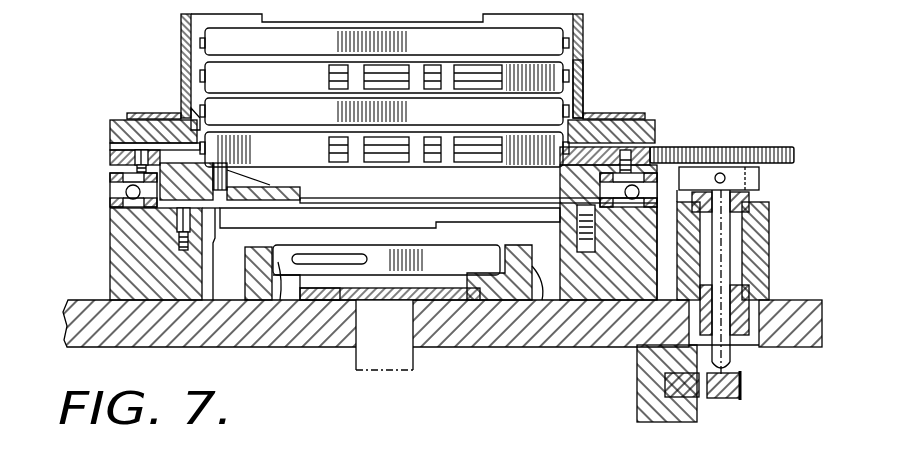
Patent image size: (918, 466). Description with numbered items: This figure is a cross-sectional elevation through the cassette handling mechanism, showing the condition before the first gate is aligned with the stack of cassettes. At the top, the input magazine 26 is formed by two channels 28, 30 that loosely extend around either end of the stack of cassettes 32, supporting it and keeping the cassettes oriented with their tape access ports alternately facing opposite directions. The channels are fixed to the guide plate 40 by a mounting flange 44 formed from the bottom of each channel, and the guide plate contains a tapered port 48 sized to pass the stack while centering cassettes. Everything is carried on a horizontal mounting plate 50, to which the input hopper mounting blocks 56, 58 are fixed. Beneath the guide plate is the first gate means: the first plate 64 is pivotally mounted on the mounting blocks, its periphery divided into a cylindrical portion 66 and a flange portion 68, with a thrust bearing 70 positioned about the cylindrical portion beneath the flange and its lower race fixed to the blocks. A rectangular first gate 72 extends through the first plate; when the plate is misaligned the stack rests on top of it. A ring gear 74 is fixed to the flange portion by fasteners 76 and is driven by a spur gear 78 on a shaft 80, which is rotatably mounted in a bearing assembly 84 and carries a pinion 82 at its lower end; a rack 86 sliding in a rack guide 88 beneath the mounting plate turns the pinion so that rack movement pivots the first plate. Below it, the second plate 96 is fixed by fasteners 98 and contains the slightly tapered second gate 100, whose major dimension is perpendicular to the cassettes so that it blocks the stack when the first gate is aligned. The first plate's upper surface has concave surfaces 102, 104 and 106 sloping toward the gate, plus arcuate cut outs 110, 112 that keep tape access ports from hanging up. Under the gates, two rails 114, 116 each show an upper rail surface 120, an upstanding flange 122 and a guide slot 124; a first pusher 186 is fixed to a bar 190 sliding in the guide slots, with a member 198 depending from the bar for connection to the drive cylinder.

The input magazine 26 is at (586, 38).
The channel 28 is at (586, 55).
The channel 30 is at (191, 10).
The stack of cassettes 32 is at (320, 19).
The guide plate 40 is at (657, 130).
The mounting flange 44 is at (143, 113).
The port 48 is at (200, 118).
The mounting plate 50 is at (562, 346).
The input hopper mounting block 56 is at (583, 272).
The input hopper mounting block 58 is at (110, 245).
The first plate 64 is at (108, 177).
The cylindrical portion 66 is at (255, 172).
The flange portion 68 is at (110, 187).
The thrust bearing 70 is at (110, 202).
The first gate 72 is at (283, 198).
The ring gear 74 is at (112, 147).
The fastener 76 is at (140, 148).
The spur gear 78 is at (786, 147).
The shaft 80 is at (722, 240).
The pinion 82 is at (742, 385).
The bearing assembly 84 is at (769, 273).
The rack 86 is at (686, 393).
The rack guide 88 is at (655, 423).
The second plate 96 is at (162, 224).
The fastener 98 is at (180, 252).
The second gate 100 is at (240, 247).
The concave surface 102 is at (258, 172).
The concave surface 104 is at (560, 168).
The concave surface 106 is at (373, 170).
The arcuate cut out 110 is at (272, 178).
The arcuate cut out 112 is at (501, 180).
The rail 114 is at (508, 272).
The rail 116 is at (283, 262).
The upper rail surface 120 is at (386, 260).
The upstanding flange 122 is at (540, 266).
The guide slot 124 is at (470, 289).
The first pusher 186 is at (300, 289).
The bar 190 is at (340, 312).
The member 198 is at (398, 376).